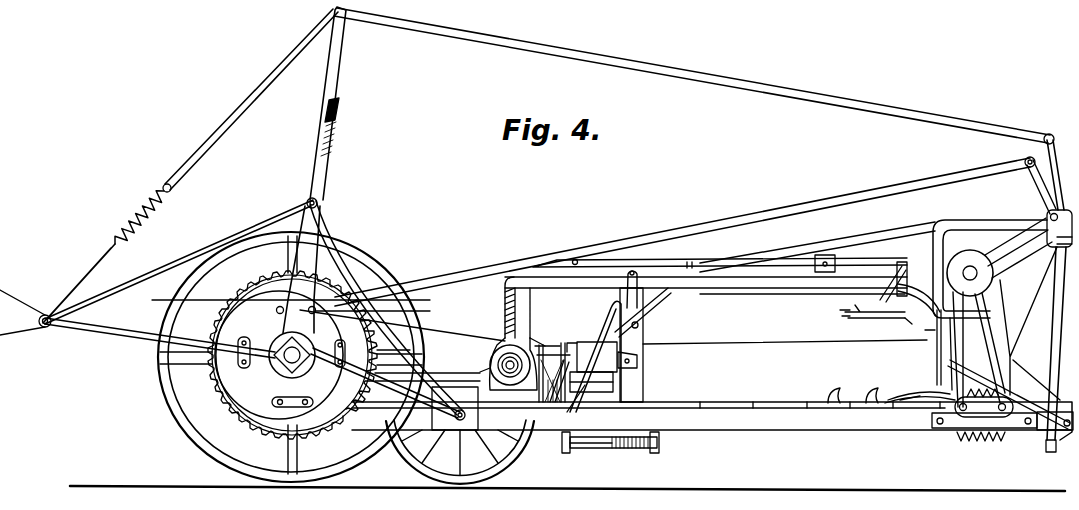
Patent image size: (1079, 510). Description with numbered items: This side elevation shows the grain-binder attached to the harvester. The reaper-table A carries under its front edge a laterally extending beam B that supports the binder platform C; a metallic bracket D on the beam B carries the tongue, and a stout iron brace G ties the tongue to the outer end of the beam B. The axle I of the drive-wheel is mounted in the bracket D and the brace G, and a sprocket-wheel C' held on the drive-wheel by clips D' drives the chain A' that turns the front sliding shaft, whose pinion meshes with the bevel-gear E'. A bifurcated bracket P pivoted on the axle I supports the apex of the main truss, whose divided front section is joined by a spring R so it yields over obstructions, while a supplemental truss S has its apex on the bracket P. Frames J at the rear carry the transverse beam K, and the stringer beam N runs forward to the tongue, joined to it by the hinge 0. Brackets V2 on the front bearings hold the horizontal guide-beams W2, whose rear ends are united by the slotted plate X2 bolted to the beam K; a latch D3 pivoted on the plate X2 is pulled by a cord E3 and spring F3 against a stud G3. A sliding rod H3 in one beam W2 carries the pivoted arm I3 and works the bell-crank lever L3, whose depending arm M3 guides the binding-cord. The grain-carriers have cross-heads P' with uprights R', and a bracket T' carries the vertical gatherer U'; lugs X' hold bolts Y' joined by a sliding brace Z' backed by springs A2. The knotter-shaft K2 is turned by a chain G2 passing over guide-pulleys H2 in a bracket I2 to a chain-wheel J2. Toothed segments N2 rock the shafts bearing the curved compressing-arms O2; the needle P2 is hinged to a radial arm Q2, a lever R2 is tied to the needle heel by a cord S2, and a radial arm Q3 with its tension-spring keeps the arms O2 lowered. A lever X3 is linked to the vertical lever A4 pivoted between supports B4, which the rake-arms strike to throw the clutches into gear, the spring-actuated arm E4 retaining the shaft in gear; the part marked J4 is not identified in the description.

The spring R is at (527, 171).
The bifurcated metallic bracket P is at (318, 170).
The supplemental truss S is at (194, 258).
The iron brace G is at (126, 336).
The transverse beam K is at (358, 248).
The reaper-table A is at (291, 357).
The sprocket-wheel C' is at (290, 355).
The metallic bracket D is at (410, 351).
The axle I is at (292, 344).
The clips D' is at (295, 364).
The chain A' is at (460, 452).
The binder platform C is at (712, 412).
The beam B is at (478, 410).
The stringer beam N is at (690, 224).
The horizontal beams W2 is at (706, 296).
The longitudinally-sliding rod H3 is at (780, 252).
The brackets V2 is at (506, 312).
The bevel-gear E' is at (501, 364).
The spring F3 is at (870, 316).
The uprights R' is at (402, 324).
The uprights or supports B4 is at (541, 350).
The vertical lever A4 is at (543, 324).
The lever X3 is at (547, 341).
The spring-actuated arm E4 is at (570, 346).
The box J4 is at (597, 357).
The cross-heads P' is at (618, 382).
The hinge 0 is at (575, 403).
The vertical gatherer U' is at (643, 345).
The pivoted arm I3 is at (638, 282).
The longitudinal bolts Y' is at (647, 370).
The bracket T' is at (638, 359).
The arm or lever R2 is at (785, 335).
The springs A2 is at (613, 451).
The lugs X' is at (553, 443).
The transverse brace Z' is at (591, 454).
The downwardly-extending arm M3 is at (932, 270).
The latch D3 is at (888, 262).
The lug or stud G3 is at (919, 295).
The cord E3 is at (841, 305).
The metallic plate X2 is at (908, 318).
The brackets or frames J is at (1030, 310).
The vertical guide-pulleys H2 is at (970, 273).
The chain-wheel J2 is at (978, 256).
The bell-crank lever L3 is at (1044, 192).
The chain G2 is at (992, 322).
The cord S2 is at (1012, 368).
The bracket I2 is at (1002, 409).
The radial arm Q3 is at (964, 442).
The needle P2 is at (820, 392).
The curved arms O2 is at (876, 388).
The toothed segments N2 is at (912, 396).
The arm Q2 is at (910, 382).
The knotter-shaft K2 is at (930, 332).